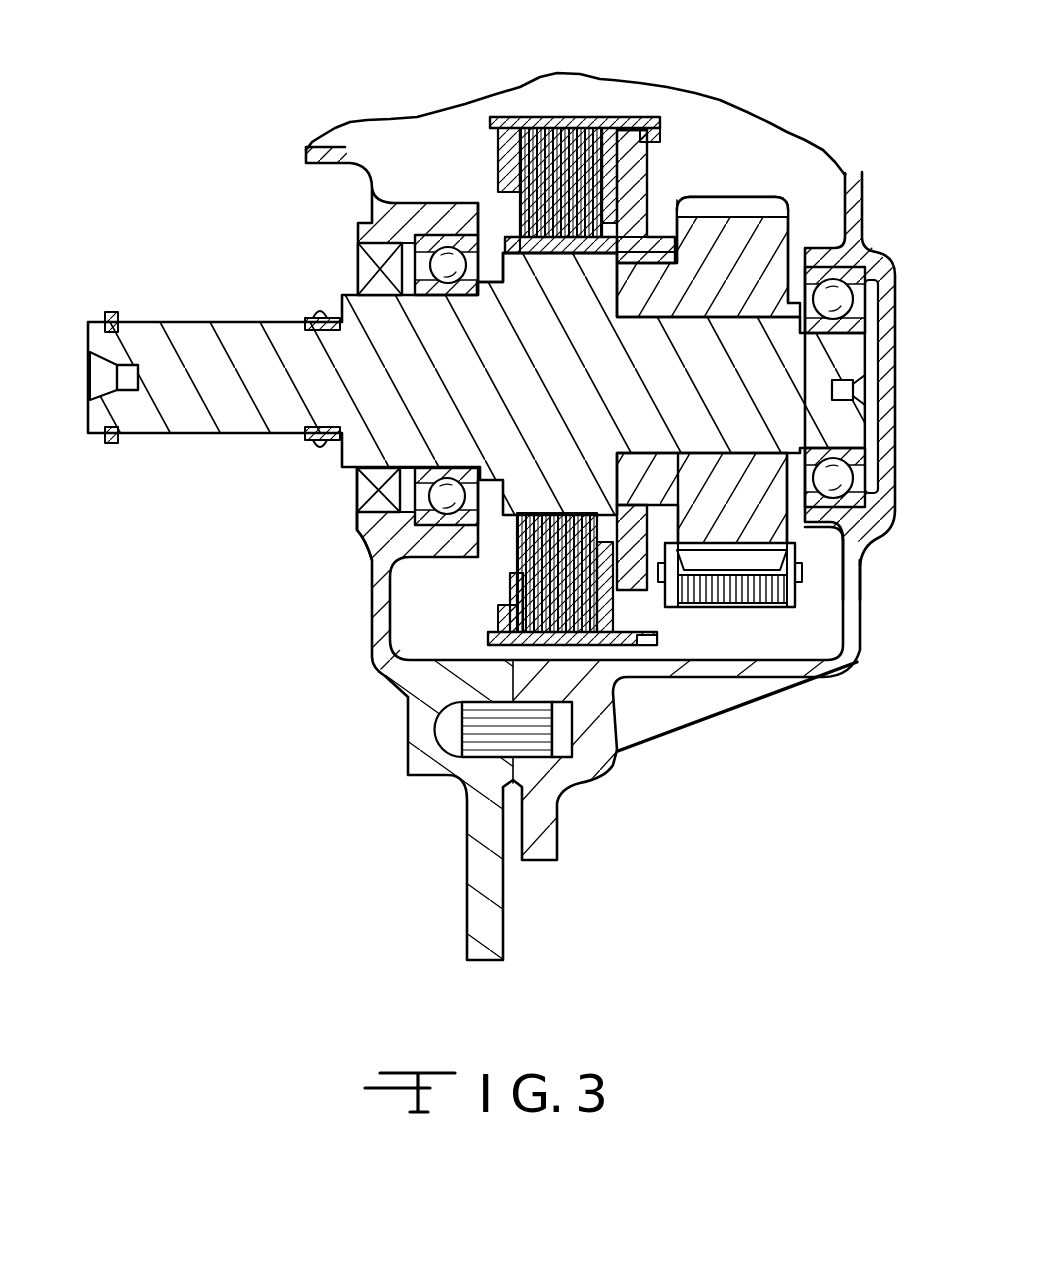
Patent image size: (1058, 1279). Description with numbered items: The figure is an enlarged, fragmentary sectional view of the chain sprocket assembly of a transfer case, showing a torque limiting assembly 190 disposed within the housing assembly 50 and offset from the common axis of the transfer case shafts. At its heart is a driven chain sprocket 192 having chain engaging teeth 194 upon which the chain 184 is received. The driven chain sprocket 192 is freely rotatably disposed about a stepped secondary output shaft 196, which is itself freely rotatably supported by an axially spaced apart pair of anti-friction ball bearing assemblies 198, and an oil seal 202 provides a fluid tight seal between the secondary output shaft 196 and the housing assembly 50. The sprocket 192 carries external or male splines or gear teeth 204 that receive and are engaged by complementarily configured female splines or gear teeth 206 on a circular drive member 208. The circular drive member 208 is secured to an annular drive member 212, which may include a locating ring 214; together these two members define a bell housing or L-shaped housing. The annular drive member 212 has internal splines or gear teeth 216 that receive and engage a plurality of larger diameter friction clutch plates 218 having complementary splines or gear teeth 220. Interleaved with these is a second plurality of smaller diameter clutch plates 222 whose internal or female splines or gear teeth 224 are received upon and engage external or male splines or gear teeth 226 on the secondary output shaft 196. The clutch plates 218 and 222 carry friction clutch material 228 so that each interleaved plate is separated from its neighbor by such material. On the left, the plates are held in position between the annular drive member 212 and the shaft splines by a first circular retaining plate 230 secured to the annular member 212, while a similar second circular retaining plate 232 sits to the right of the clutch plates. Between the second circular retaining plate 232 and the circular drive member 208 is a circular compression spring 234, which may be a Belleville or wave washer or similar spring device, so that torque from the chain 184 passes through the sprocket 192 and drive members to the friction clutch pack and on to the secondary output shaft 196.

The housing assembly 50 is at (593, 790).
The chain 184 is at (753, 630).
The torque limiting assembly 190 is at (813, 117).
The driven chain sprocket 192 is at (775, 257).
The chain engaging teeth 194 is at (747, 207).
The stepped secondary output shaft 196 is at (188, 420).
The ball bearing assemblies 198 is at (430, 515).
The oil seal 202 is at (368, 490).
The external splines 204 is at (645, 325).
The female splines 206 is at (668, 250).
The circular drive member 208 is at (638, 162).
The annular drive member 212 is at (605, 140).
The locating ring 214 is at (702, 130).
The internal splines 216 is at (520, 145).
The larger diameter friction clutch plates 218 is at (540, 150).
The splines 220 is at (553, 132).
The smaller diameter clutch plates 222 is at (545, 255).
The internal splines 224 is at (570, 250).
The external splines 226 is at (548, 285).
The friction clutch material 228 is at (593, 117).
The first circular retaining plate 230 is at (510, 173).
The second circular retaining plate 232 is at (648, 130).
The circular compression spring 234 is at (595, 512).